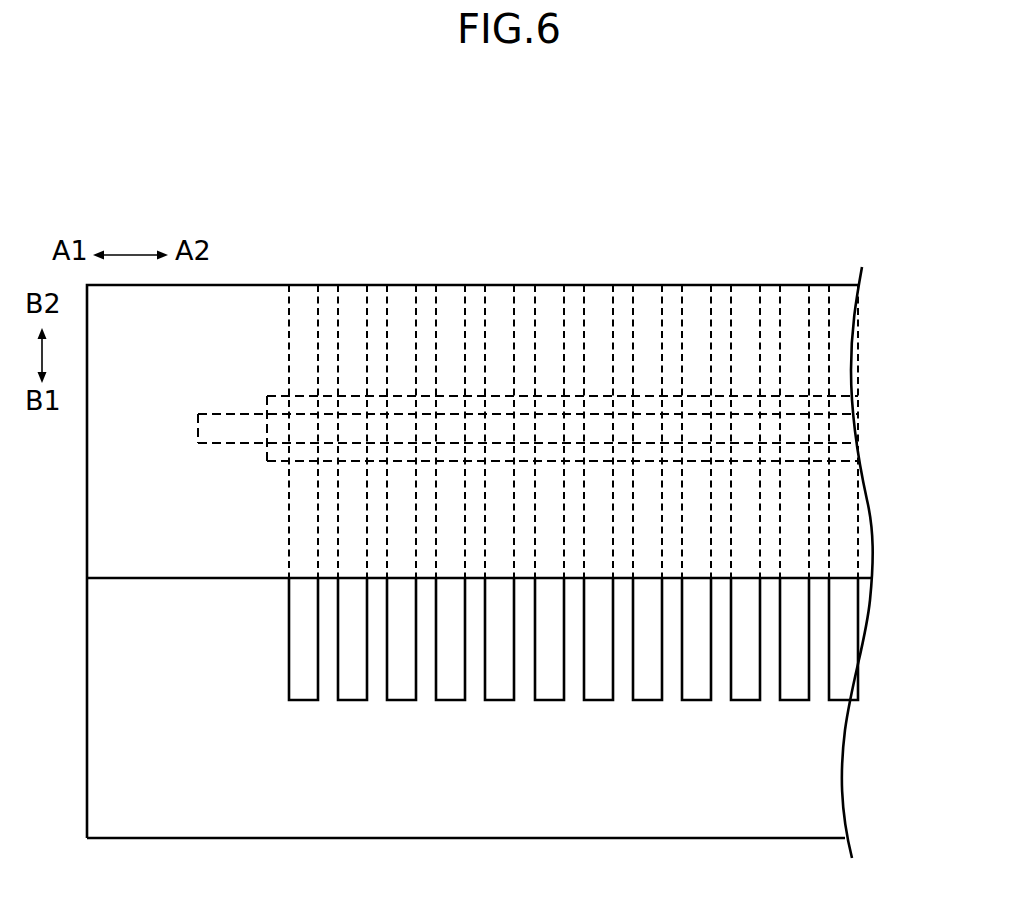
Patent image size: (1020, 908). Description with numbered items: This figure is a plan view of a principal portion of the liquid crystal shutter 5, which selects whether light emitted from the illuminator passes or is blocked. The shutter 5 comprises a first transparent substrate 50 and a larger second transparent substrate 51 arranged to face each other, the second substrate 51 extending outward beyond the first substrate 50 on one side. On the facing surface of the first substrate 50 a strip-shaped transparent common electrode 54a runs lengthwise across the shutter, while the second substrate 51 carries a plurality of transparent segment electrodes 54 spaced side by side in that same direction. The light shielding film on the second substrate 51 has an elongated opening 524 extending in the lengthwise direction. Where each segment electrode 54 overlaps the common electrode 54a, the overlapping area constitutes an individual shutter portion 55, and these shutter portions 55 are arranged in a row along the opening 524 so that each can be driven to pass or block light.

The liquid crystal shutter 5 is at (78, 705).
The first transparent substrate 50 is at (235, 323).
The second transparent substrate 51 is at (377, 815).
The electrode 54 is at (352, 340).
The common electrode 54a is at (213, 427).
The individual shutter portions 55 is at (447, 342).
The opening 524 is at (595, 400).